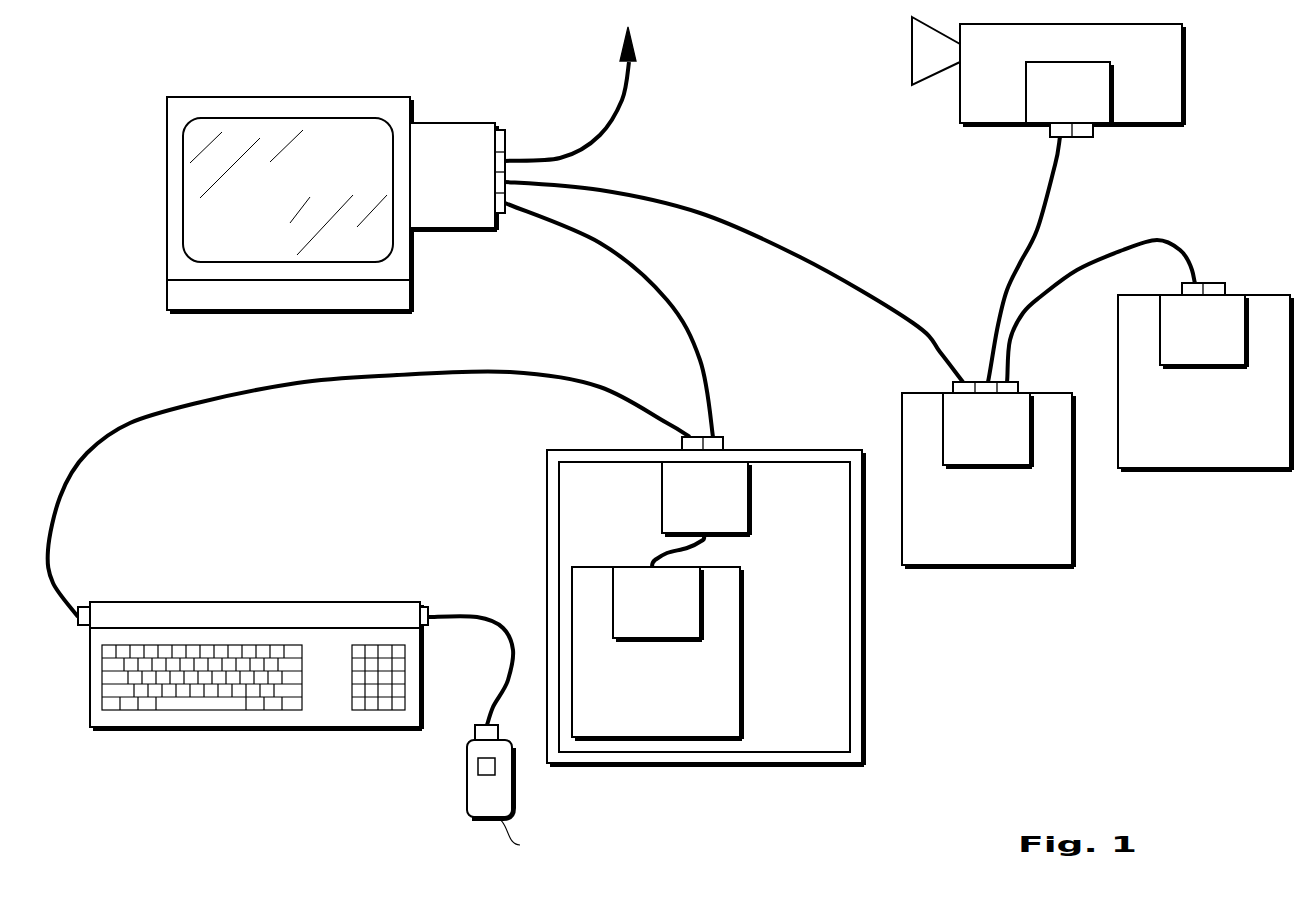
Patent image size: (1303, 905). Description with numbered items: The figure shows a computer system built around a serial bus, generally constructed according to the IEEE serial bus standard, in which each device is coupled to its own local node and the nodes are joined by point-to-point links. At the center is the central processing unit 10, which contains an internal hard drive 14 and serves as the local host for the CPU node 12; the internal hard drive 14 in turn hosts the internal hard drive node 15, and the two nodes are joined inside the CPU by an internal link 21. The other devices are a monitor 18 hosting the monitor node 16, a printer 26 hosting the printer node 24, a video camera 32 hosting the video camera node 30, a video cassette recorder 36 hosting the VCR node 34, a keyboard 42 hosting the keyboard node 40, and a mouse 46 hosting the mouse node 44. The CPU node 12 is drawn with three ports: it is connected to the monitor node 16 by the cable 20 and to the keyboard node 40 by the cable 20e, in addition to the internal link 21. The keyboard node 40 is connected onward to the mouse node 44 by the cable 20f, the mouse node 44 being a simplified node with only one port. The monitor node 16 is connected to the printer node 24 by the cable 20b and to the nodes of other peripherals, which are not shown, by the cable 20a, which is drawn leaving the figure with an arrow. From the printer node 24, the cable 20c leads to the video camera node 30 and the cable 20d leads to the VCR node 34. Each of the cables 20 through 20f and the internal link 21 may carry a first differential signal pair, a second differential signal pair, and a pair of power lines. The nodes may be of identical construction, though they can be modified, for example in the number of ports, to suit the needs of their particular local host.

The central processing unit 10 is at (838, 743).
The CPU node 12 is at (737, 530).
The internal hard drive 14 is at (728, 731).
The internal hard drive node 15 is at (687, 633).
The monitor node 16 is at (482, 220).
The monitor 18 is at (381, 250).
The cable 20 is at (673, 315).
The cable 20a is at (602, 120).
The cable 20b is at (743, 230).
The cable 20c is at (1015, 280).
The cable 20d is at (1027, 315).
The cable 20e is at (427, 375).
The cable 20f is at (477, 613).
The internal link 21 is at (657, 553).
The printer node 24 is at (1018, 460).
The printer 26 is at (1057, 558).
The video camera node 30 is at (1102, 120).
The video camera 32 is at (1168, 116).
The VCR node 34 is at (1232, 360).
The video cassette recorder 36 is at (1277, 460).
The keyboard node 40 is at (402, 626).
The keyboard 42 is at (337, 716).
The mouse node 44 is at (470, 730).
The mouse 46 is at (497, 810).